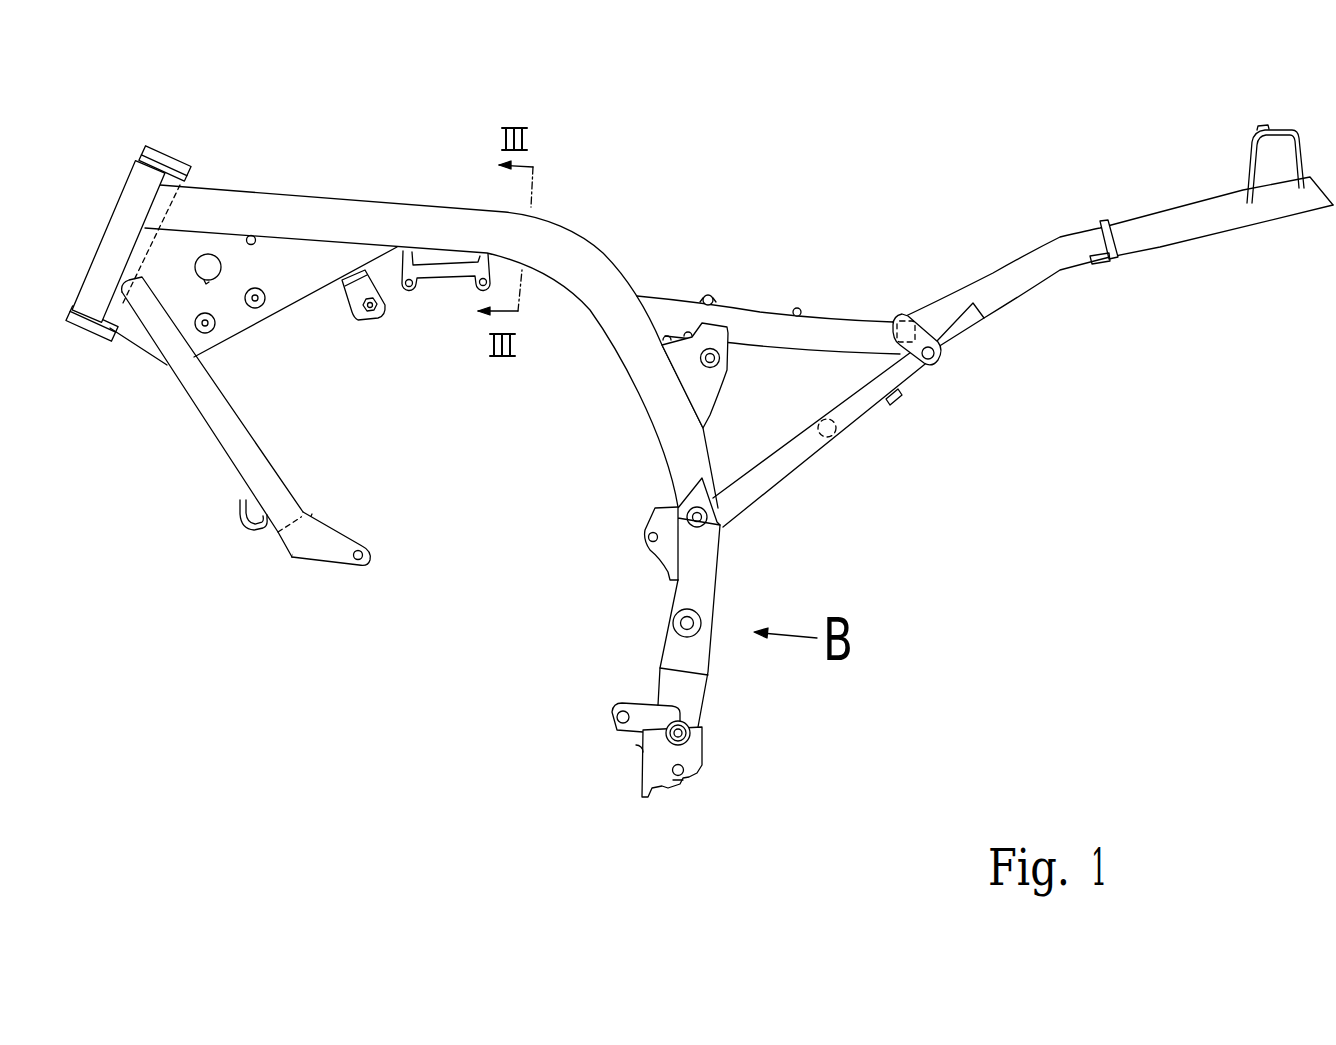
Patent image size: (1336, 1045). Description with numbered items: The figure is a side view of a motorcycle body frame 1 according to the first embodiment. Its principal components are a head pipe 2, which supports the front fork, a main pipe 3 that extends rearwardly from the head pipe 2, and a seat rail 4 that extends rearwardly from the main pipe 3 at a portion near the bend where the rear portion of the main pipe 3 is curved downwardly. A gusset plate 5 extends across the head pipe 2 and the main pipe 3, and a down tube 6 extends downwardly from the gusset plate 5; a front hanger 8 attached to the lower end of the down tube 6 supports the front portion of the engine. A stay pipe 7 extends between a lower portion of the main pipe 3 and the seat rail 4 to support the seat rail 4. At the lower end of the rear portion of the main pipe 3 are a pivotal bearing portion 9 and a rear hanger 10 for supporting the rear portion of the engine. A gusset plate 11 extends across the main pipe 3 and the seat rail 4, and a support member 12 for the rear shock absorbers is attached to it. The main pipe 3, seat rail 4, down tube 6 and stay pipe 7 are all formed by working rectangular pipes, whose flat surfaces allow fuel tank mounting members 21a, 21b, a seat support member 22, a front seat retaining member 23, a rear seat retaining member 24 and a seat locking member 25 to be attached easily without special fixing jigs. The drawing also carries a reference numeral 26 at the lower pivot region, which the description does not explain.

The body frame 1 is at (779, 194).
The head pipe 2 is at (129, 197).
The main pipe 3 is at (426, 209).
The seat rail 4 is at (1011, 262).
The gusset plate 5 is at (288, 308).
The down tube 6 is at (208, 432).
The stay pipe 7 is at (865, 414).
The front hanger 8 is at (347, 536).
The pivotal bearing portion 9 is at (674, 627).
The rear hanger 10 is at (652, 559).
The gusset plate 11 is at (719, 392).
The support member 12 is at (721, 357).
The fuel tank mounting member 21a is at (253, 235).
The fuel tank mounting member 21b is at (710, 295).
The seat support member 22 is at (912, 315).
The front seat retaining member 23 is at (799, 308).
The rear seat retaining member 24 is at (1115, 242).
The seat locking member 25 is at (1274, 130).
The pivot bracket tube 26 is at (720, 569).